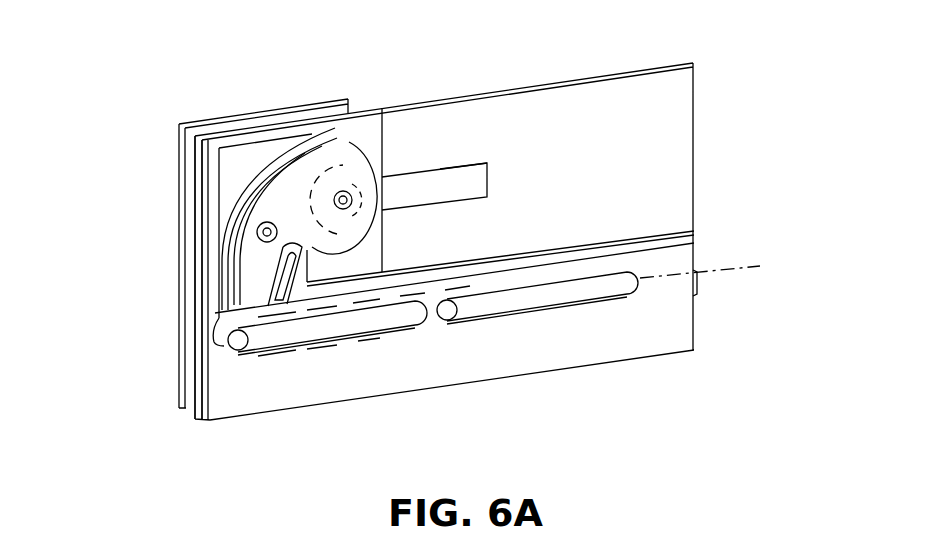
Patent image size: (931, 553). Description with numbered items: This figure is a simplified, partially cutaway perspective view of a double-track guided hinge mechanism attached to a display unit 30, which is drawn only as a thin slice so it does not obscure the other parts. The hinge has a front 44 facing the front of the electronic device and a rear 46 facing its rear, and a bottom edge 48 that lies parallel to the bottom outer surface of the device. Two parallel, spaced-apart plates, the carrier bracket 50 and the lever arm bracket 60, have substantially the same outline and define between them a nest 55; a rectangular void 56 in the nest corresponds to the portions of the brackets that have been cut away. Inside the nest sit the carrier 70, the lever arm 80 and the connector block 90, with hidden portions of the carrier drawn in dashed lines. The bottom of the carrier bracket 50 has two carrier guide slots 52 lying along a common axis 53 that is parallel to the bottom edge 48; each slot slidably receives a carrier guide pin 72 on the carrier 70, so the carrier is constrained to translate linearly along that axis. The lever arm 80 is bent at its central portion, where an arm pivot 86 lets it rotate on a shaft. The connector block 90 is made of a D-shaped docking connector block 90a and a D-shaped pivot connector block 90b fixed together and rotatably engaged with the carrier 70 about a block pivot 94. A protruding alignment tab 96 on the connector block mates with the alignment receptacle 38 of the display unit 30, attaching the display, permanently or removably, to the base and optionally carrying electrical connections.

The display unit 30 is at (693, 104).
The alignment receptacle 38 is at (490, 176).
The front 44 is at (755, 153).
The rear 46 is at (120, 266).
The bottom edge 48 is at (655, 388).
The carrier bracket 50 is at (694, 294).
The carrier guide slots 52 is at (553, 305).
The axis 53 is at (700, 272).
The nest 55 is at (190, 362).
The rectangular void 56 is at (252, 158).
The lever arm bracket 60 is at (196, 410).
The carrier 70 is at (250, 268).
The carrier guide pin 72 is at (450, 312).
The lever arm 80 is at (253, 197).
The arm pivot 86 is at (257, 231).
The connector block 90 is at (364, 58).
The docking connector block 90a is at (362, 172).
The pivot connector block 90b is at (300, 147).
The block pivot 94 is at (347, 192).
The alignment tab 96 is at (467, 177).